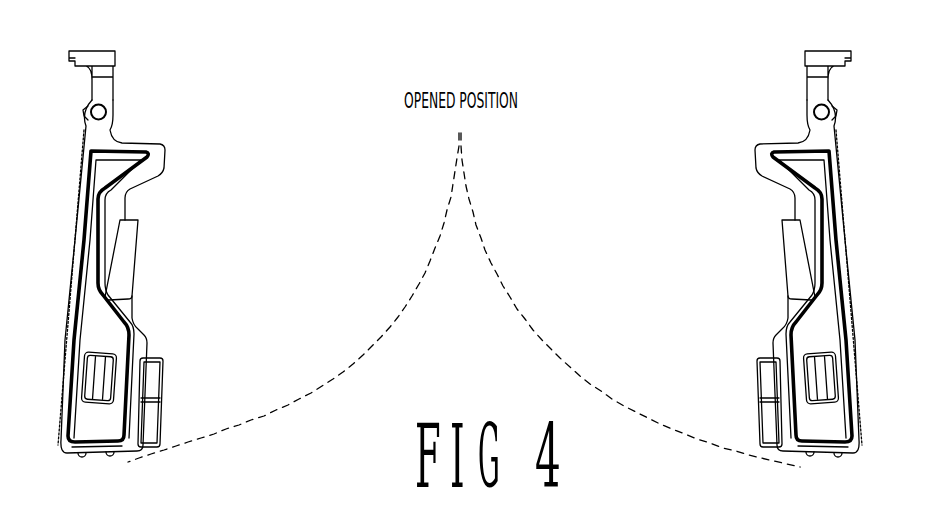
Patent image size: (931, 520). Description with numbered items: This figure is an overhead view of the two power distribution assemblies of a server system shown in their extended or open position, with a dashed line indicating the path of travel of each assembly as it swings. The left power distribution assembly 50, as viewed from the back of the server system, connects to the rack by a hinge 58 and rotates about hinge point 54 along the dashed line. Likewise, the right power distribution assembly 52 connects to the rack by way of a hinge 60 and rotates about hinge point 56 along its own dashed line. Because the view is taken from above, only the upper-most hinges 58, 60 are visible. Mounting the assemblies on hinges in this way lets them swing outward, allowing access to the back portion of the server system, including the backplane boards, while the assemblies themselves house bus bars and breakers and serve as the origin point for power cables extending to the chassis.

The left power distribution assembly 50 is at (137, 331).
The right power distribution assembly 52 is at (780, 334).
The hinge point 54 is at (102, 114).
The hinge point 56 is at (818, 114).
The hinge 58 is at (94, 56).
The hinge 60 is at (815, 55).